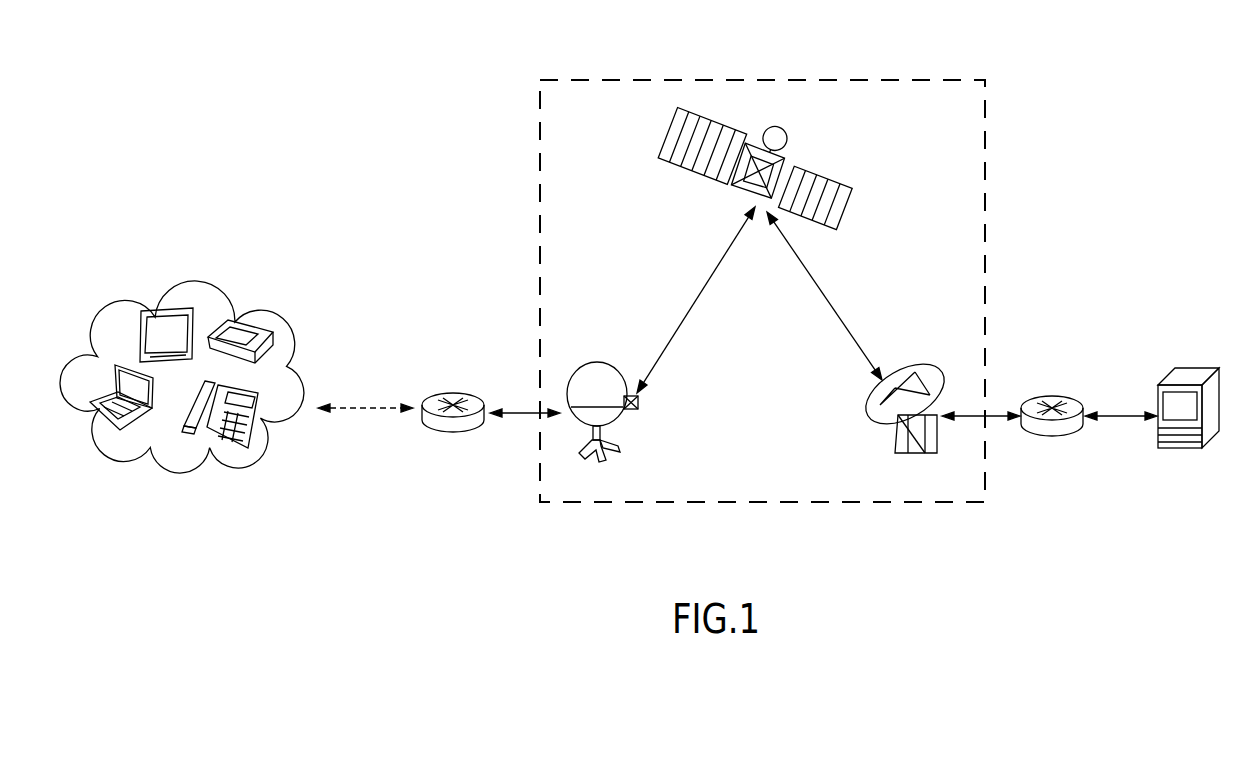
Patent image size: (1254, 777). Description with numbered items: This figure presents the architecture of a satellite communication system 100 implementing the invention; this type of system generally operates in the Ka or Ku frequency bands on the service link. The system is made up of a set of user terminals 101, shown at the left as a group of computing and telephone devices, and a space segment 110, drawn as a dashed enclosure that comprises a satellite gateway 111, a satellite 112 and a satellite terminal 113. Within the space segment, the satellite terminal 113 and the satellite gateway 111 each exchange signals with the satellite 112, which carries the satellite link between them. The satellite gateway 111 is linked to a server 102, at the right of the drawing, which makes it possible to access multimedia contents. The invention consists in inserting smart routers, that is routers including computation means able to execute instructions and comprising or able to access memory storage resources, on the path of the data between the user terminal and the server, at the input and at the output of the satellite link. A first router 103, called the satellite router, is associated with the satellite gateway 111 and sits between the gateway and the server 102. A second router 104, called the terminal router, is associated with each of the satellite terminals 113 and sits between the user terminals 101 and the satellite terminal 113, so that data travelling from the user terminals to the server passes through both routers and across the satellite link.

The satellite communication system 100 is at (294, 98).
The user terminals 101 is at (227, 292).
The server 102 is at (1197, 368).
The satellite router 103 is at (1050, 395).
The terminal router 104 is at (458, 388).
The space segment 110 is at (670, 80).
The satellite gateway 111 is at (889, 435).
The satellite 112 is at (792, 148).
The satellite terminal 113 is at (628, 423).